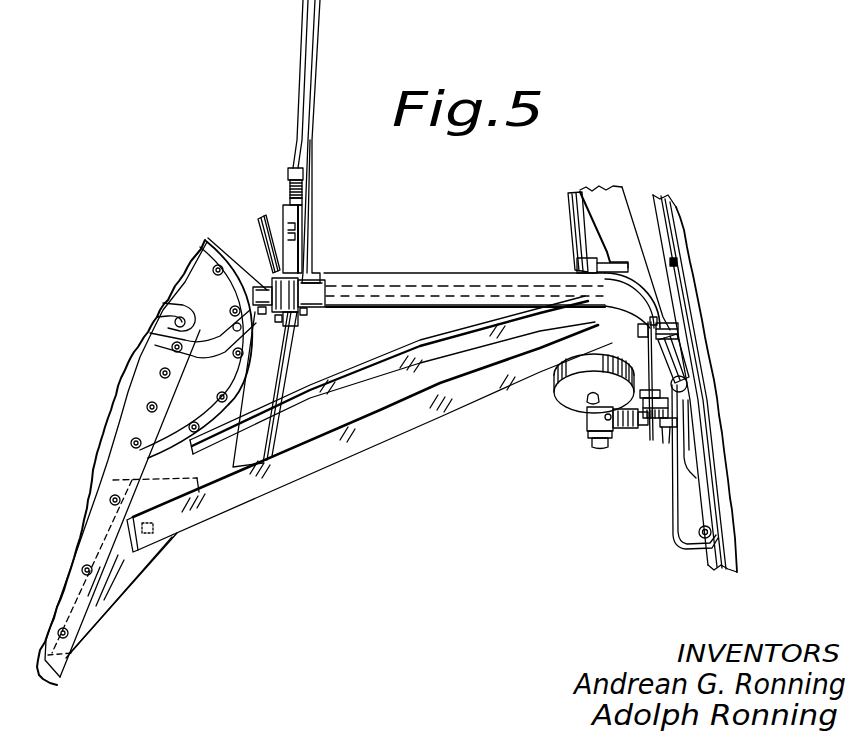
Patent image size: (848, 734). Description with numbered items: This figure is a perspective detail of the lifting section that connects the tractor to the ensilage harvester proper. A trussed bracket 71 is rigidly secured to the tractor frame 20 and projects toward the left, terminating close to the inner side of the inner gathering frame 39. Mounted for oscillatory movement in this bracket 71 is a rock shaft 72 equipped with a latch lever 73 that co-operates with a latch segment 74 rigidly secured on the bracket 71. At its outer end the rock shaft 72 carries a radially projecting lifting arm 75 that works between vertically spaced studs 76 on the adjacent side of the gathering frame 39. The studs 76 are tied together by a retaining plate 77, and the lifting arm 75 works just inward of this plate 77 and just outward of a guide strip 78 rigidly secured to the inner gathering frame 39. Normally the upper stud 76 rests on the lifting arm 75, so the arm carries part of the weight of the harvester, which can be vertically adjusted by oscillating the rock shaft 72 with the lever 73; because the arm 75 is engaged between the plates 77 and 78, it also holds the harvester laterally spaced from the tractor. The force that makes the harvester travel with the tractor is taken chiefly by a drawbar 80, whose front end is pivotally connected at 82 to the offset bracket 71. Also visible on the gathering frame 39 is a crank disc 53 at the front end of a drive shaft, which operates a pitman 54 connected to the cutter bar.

The tractor frame 20 is at (95, 553).
The gathering frame 39 is at (670, 237).
The crank disc 53 is at (577, 403).
The pitman 54 is at (632, 428).
The trussed bracket 71 is at (458, 397).
The rock shaft 72 is at (412, 292).
The latch lever 73 is at (303, 198).
The latch segment 74 is at (283, 233).
The lifting arm 75 is at (683, 352).
The studs 76 is at (663, 325).
The retaining plate 77 is at (648, 348).
The guide strip 78 is at (680, 487).
The drawbar 80 is at (593, 205).
The pivotal connection 82 is at (605, 262).